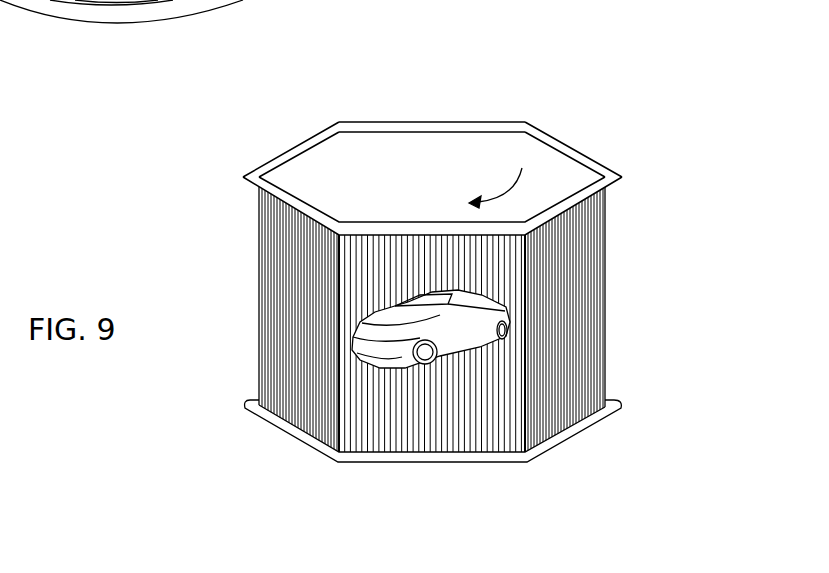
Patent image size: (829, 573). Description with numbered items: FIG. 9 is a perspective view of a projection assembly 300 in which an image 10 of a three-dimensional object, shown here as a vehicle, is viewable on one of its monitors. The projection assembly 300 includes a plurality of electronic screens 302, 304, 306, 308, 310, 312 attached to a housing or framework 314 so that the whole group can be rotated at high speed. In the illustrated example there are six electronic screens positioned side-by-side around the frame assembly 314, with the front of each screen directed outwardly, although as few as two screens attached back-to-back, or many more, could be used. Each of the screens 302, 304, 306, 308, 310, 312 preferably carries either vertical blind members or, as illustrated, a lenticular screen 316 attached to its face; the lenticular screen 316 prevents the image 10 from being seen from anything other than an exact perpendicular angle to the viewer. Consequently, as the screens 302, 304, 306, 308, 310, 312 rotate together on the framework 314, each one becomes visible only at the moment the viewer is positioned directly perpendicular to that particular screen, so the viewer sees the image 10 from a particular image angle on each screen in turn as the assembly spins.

The image 10 is at (377, 328).
The projection assembly 300 is at (582, 88).
The electronic screen 302 is at (363, 407).
The electronic screen 304 is at (290, 300).
The electronic screen 306 is at (301, 155).
The electronic screen 308 is at (372, 125).
The electronic screen 310 is at (548, 140).
The electronic screen 312 is at (568, 316).
The housing or framework 314 is at (358, 188).
The lenticular screen 316 is at (472, 392).